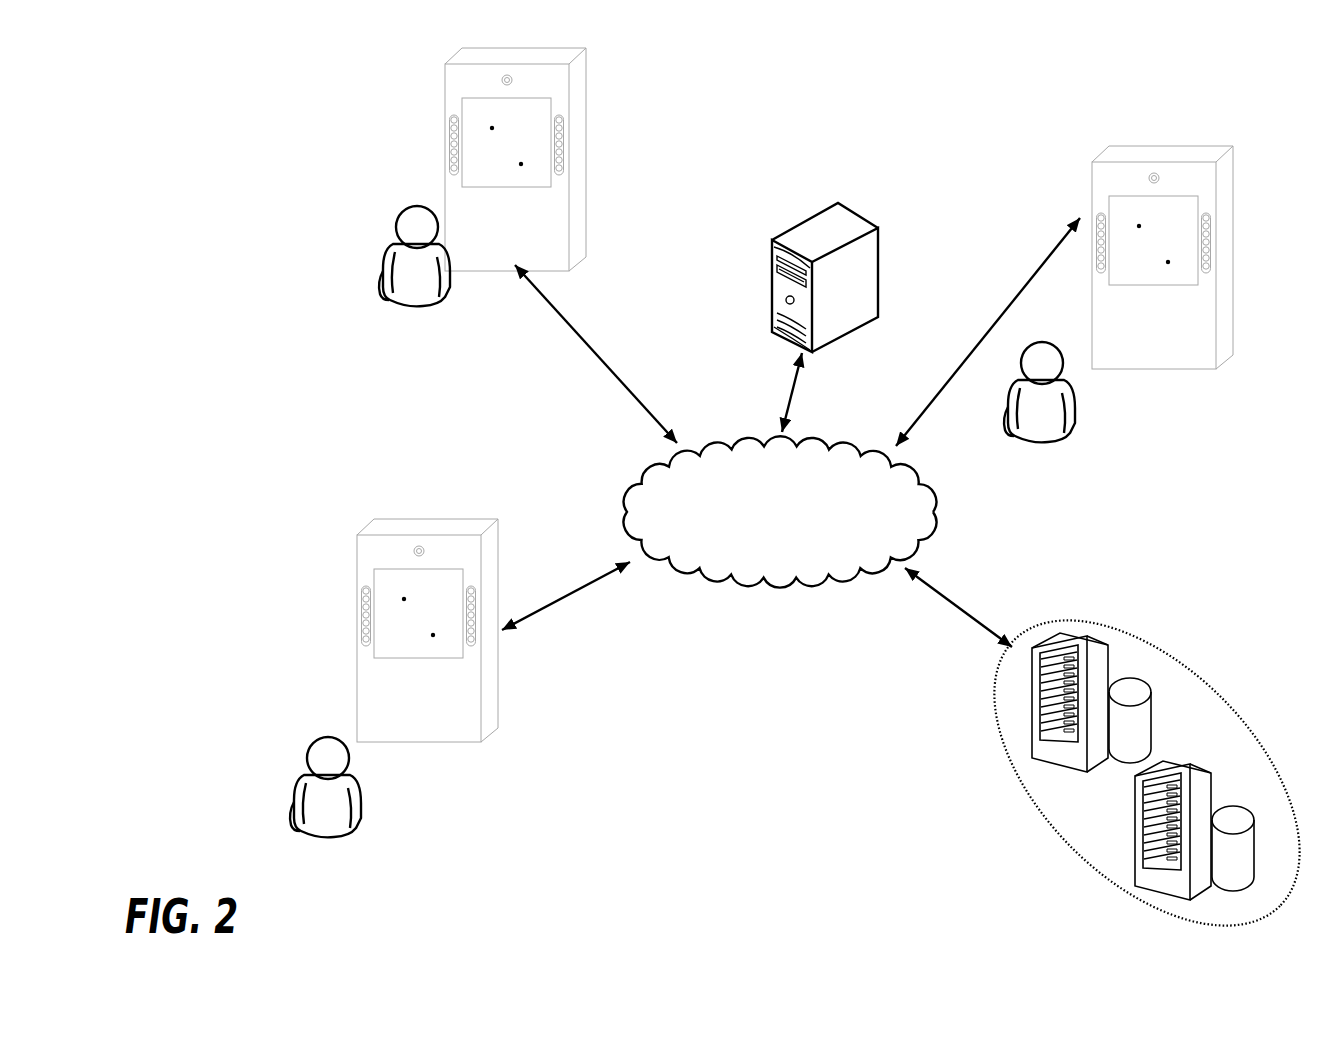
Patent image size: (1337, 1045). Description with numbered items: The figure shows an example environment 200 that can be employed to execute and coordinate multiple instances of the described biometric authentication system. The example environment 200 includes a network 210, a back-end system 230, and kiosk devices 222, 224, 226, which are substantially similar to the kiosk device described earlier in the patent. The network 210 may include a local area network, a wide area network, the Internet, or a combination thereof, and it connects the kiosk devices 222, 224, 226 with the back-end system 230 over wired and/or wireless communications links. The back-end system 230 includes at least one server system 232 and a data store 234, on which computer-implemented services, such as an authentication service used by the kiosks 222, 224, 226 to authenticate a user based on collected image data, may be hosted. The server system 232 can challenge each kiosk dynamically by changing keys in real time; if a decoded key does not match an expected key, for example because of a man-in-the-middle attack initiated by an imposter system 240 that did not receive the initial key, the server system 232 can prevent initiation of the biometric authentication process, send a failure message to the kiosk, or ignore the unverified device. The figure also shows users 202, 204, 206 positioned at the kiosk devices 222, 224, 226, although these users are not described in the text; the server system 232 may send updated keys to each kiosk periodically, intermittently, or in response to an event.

The example environment 200 is at (305, 95).
The user 202 is at (288, 788).
The user 204 is at (382, 257).
The user 206 is at (1082, 421).
The network 210 is at (760, 590).
The kiosk device 222 is at (484, 711).
The kiosk device 224 is at (573, 240).
The kiosk device 226 is at (1220, 337).
The back-end system 230 is at (1138, 773).
The server system 232 is at (1063, 637).
The data store 234 is at (1135, 678).
The imposter system 240 is at (855, 219).